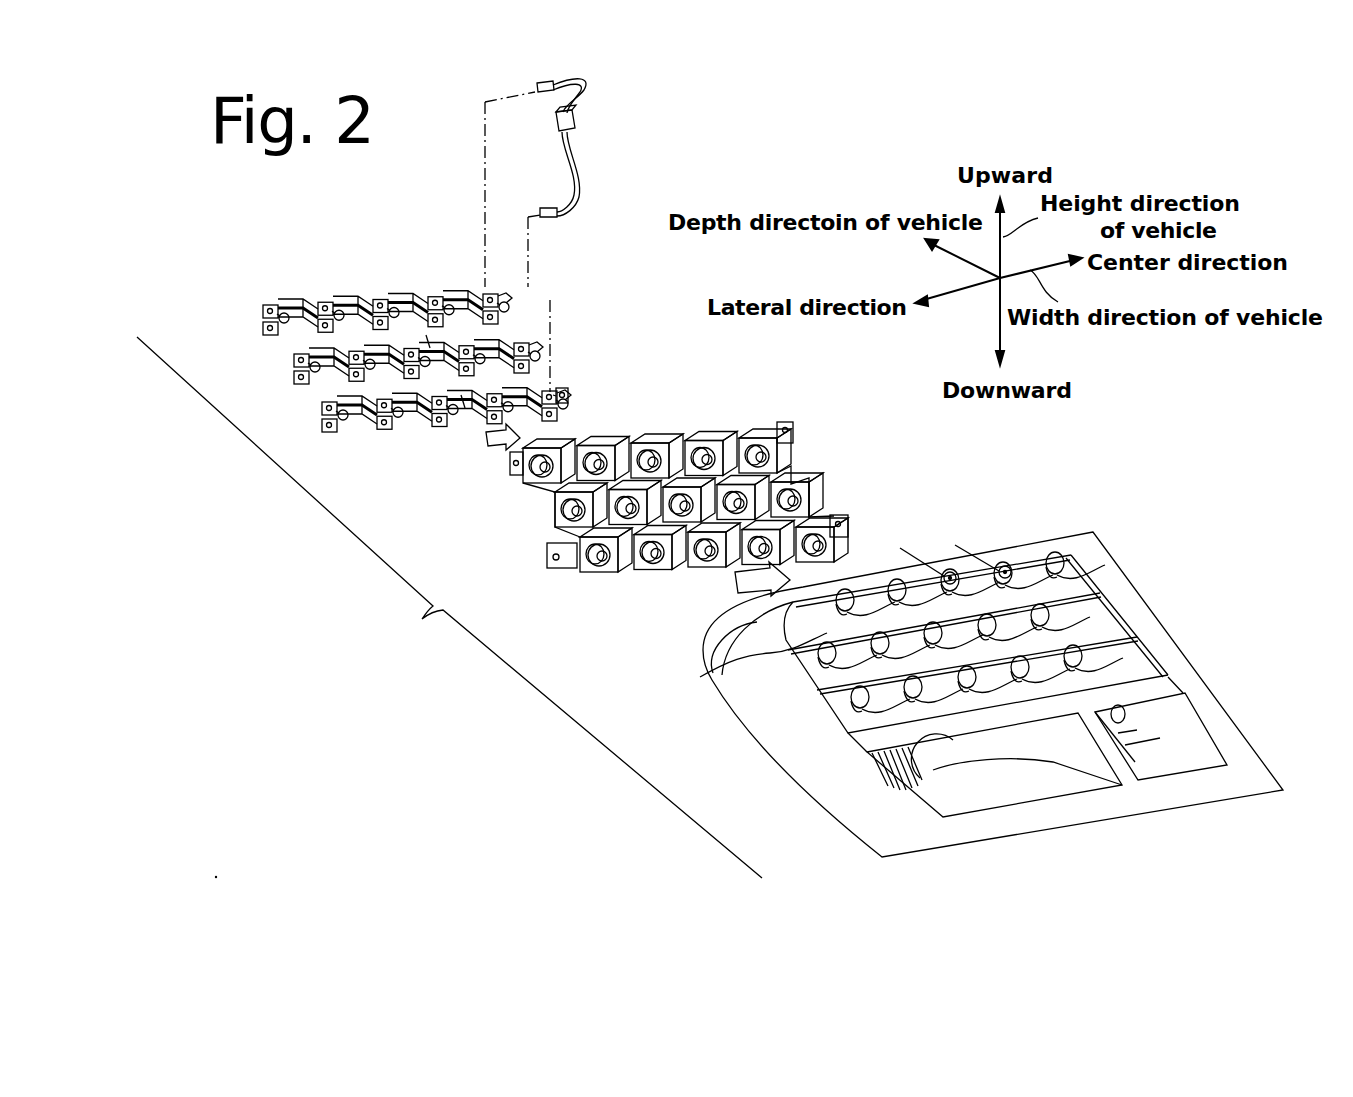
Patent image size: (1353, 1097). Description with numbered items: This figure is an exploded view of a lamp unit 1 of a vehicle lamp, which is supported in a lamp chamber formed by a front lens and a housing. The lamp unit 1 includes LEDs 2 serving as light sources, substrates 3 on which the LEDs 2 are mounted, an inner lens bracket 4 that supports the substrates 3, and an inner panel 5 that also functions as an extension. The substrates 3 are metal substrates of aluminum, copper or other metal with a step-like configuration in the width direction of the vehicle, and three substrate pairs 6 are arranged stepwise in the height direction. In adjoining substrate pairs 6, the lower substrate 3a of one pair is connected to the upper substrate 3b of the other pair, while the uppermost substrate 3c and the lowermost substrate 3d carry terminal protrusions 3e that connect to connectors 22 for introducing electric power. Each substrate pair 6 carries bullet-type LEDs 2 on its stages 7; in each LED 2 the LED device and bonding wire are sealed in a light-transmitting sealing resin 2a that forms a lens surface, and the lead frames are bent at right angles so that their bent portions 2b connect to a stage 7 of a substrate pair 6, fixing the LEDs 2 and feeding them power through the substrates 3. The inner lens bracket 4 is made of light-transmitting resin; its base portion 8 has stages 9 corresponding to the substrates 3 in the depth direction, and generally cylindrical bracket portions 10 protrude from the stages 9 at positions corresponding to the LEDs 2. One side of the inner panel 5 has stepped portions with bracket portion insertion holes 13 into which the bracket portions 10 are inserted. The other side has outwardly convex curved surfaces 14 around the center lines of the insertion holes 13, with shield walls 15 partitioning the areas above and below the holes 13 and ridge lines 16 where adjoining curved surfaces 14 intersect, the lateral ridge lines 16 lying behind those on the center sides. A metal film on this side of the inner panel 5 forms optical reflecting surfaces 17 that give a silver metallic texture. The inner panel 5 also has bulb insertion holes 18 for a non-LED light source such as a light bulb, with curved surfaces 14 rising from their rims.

The lamp unit 1 is at (400, 641).
The LED 2 is at (407, 317).
The sealing resin 2a is at (353, 318).
The bent portion 2b is at (283, 303).
The substrate 3 is at (415, 349).
The lower substrate 3a is at (263, 328).
The upper substrate 3b is at (298, 363).
The uppermost substrate 3c is at (263, 308).
The lowermost substrate 3d is at (330, 434).
The terminal protrusion 3e is at (443, 297).
The inner lens bracket 4 is at (679, 475).
The inner panel 5 is at (978, 679).
The substrate pair 6 is at (514, 311).
The stage 7 is at (428, 345).
The base portion 8 is at (682, 438).
The stage 9 is at (663, 440).
The bracket portion 10 is at (645, 452).
The bracket portion insertion hole 13 is at (945, 574).
The curved surface 14 is at (975, 585).
The shield wall 15 is at (1073, 543).
The ridge line 16 is at (1082, 580).
The optical reflecting surface 17 is at (713, 673).
The bulb insertion hole 18 is at (1105, 710).
The connector 22 is at (577, 124).